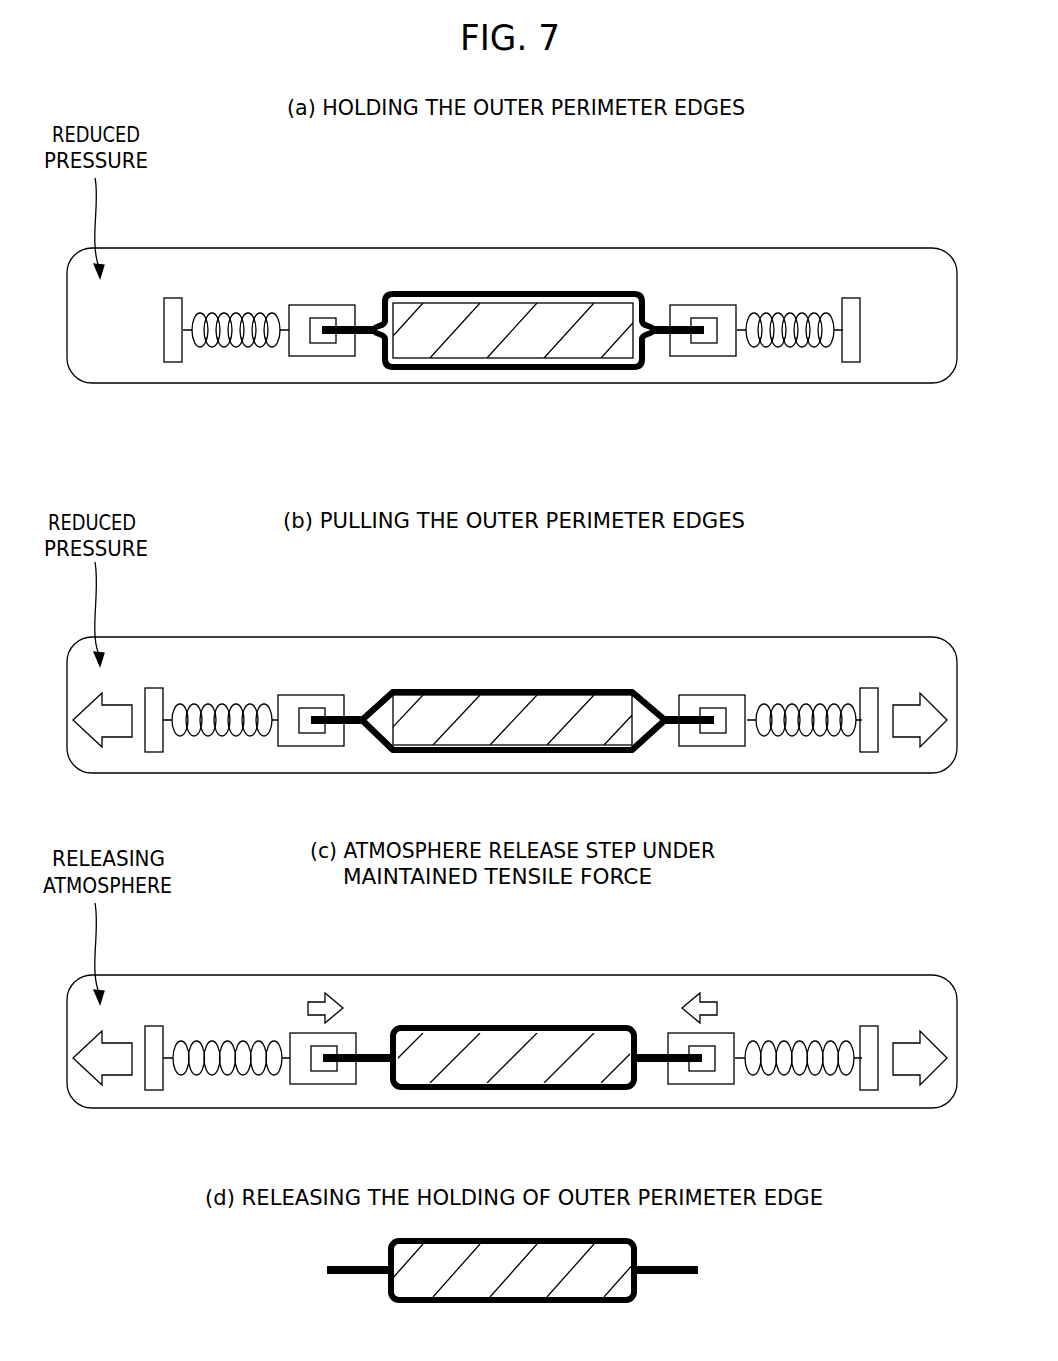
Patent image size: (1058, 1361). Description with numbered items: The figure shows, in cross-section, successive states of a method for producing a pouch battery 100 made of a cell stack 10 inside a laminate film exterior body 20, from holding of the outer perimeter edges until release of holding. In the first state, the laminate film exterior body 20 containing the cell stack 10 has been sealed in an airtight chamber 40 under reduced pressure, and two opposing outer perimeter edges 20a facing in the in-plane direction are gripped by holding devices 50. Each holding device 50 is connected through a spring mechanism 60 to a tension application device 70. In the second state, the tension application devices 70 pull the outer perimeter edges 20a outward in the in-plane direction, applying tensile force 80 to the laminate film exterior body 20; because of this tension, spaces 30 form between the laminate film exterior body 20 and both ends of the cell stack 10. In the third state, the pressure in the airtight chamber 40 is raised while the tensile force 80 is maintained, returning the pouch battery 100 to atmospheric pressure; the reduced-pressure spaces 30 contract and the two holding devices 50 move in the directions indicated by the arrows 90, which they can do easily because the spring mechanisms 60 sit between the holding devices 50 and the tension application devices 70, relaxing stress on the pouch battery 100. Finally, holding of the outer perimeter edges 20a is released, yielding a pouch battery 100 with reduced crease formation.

The cell stack 10 is at (432, 328).
The laminate film exterior body 20 is at (499, 292).
The outer perimeter edges 20a is at (370, 320).
The spaces 30 is at (382, 715).
The airtight chamber 40 is at (226, 247).
The holding devices 50 is at (325, 357).
The spring mechanisms 60 is at (243, 350).
The tension application devices 70 is at (175, 363).
The tensile force 80 is at (113, 720).
The arrows 90 is at (318, 1008).
The pouch battery 100 is at (521, 140).